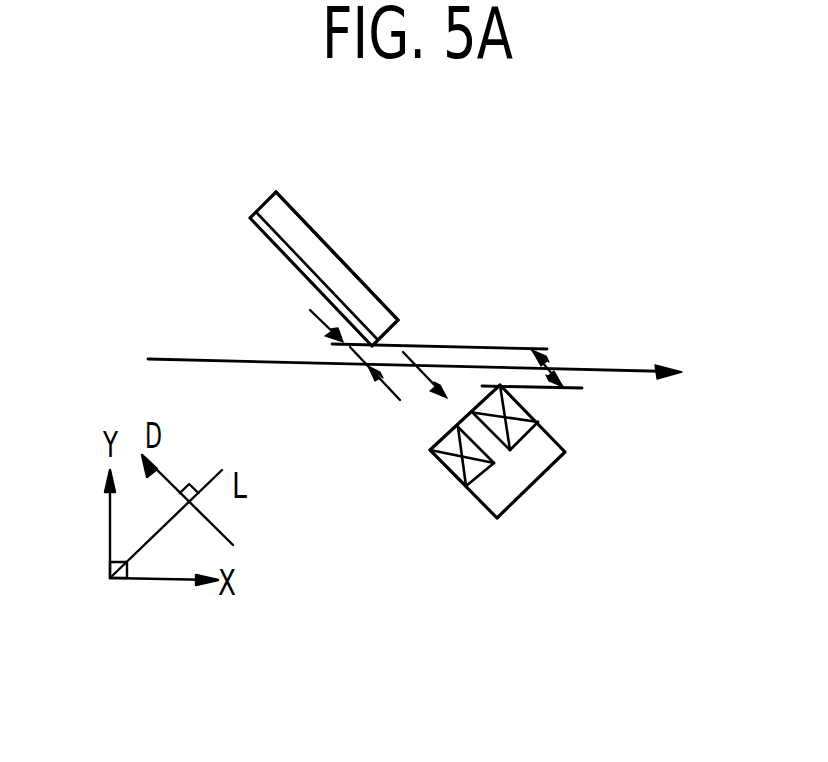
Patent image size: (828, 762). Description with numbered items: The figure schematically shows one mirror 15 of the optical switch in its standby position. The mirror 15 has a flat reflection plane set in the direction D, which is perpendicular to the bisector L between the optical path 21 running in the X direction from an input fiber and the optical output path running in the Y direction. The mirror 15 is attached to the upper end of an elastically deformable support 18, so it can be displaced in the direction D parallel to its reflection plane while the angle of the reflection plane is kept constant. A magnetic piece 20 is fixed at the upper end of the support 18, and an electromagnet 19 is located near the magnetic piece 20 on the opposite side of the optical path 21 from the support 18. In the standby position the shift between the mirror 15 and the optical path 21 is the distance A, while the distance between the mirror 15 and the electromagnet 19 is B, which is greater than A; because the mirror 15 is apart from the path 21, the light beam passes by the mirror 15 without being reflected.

The mirror 15 is at (270, 232).
The support 18 is at (282, 233).
The electromagnet 19 is at (465, 477).
The magnetic piece 20 is at (323, 252).
The optical path 21 is at (617, 370).
The distance between mirror and optical path A is at (343, 355).
The distance between mirror and electromagnet B is at (547, 353).